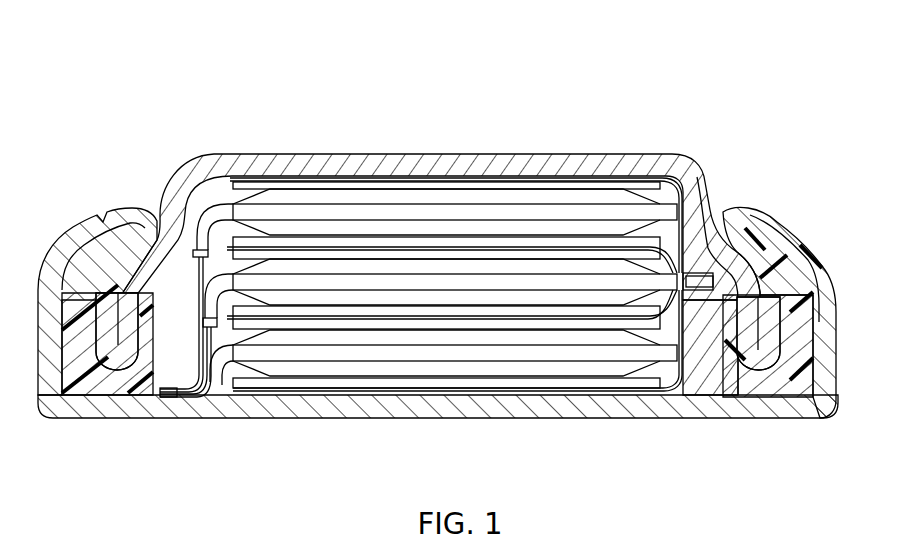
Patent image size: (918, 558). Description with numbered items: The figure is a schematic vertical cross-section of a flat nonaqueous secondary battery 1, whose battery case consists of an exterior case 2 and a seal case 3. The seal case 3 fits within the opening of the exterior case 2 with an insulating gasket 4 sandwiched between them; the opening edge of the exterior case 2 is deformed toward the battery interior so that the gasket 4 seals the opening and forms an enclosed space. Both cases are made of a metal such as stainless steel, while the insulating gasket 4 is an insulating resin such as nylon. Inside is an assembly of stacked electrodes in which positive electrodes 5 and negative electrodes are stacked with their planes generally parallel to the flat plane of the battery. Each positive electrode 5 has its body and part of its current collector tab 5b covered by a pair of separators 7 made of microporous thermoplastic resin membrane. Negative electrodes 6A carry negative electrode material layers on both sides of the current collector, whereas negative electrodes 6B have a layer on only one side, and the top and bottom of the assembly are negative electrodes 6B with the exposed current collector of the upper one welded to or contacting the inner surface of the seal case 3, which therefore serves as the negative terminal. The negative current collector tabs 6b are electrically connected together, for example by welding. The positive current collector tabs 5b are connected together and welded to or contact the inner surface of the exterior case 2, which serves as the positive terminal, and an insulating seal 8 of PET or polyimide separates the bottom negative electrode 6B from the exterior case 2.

The flat nonaqueous secondary battery 1 is at (441, 113).
The exterior case 2 is at (263, 418).
The seal case 3 is at (227, 157).
The insulating gasket 4 is at (128, 217).
The positive electrode 5 is at (454, 283).
The current collector tab 5b is at (177, 390).
The negative electrode 6A is at (528, 245).
The negative electrode 6B is at (351, 183).
The current collector tab 6b is at (690, 210).
The separator 7 is at (437, 372).
The insulating seal 8 is at (318, 395).